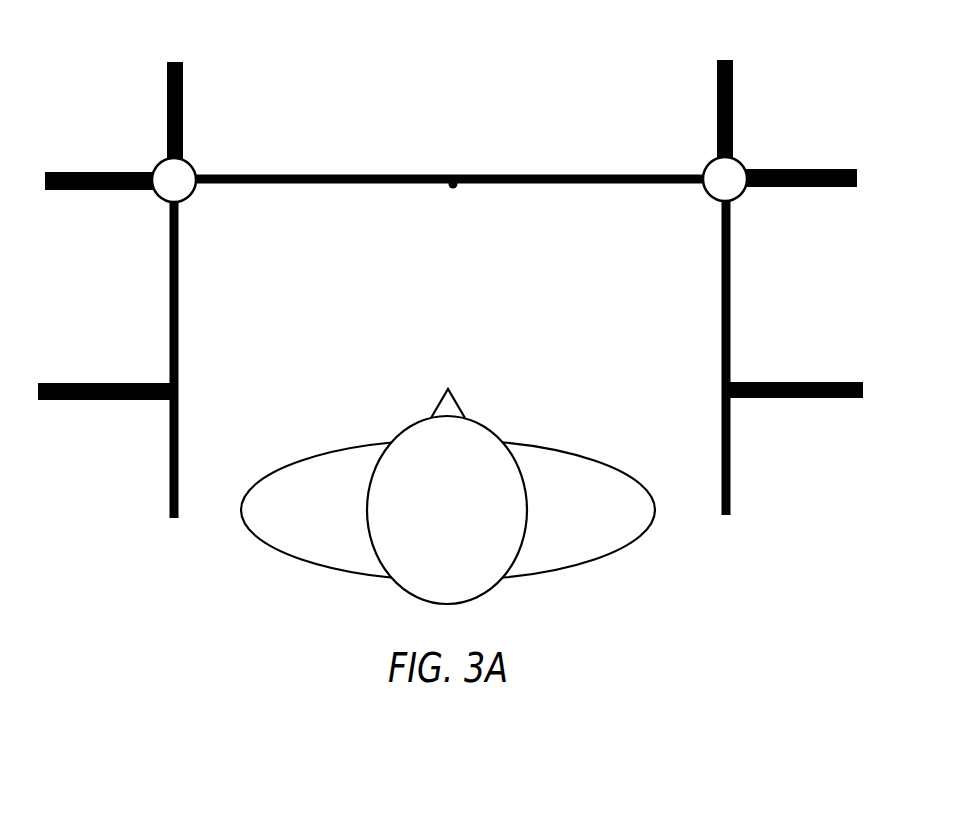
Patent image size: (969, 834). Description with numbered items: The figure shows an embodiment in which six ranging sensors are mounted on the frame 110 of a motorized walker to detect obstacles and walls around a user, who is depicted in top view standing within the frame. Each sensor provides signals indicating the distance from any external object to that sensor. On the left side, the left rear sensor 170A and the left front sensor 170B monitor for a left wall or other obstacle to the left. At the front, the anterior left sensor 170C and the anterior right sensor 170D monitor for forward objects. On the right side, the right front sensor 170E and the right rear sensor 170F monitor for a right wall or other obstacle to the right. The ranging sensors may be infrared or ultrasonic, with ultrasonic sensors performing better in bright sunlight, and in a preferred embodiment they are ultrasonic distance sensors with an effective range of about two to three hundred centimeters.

The frame 110 is at (503, 174).
The left rear sensor 170A is at (106, 373).
The left front sensor 170B is at (109, 165).
The anterior left sensor 170C is at (176, 105).
The anterior right sensor 170D is at (726, 99).
The right front sensor 170E is at (791, 162).
The right rear sensor 170F is at (794, 372).